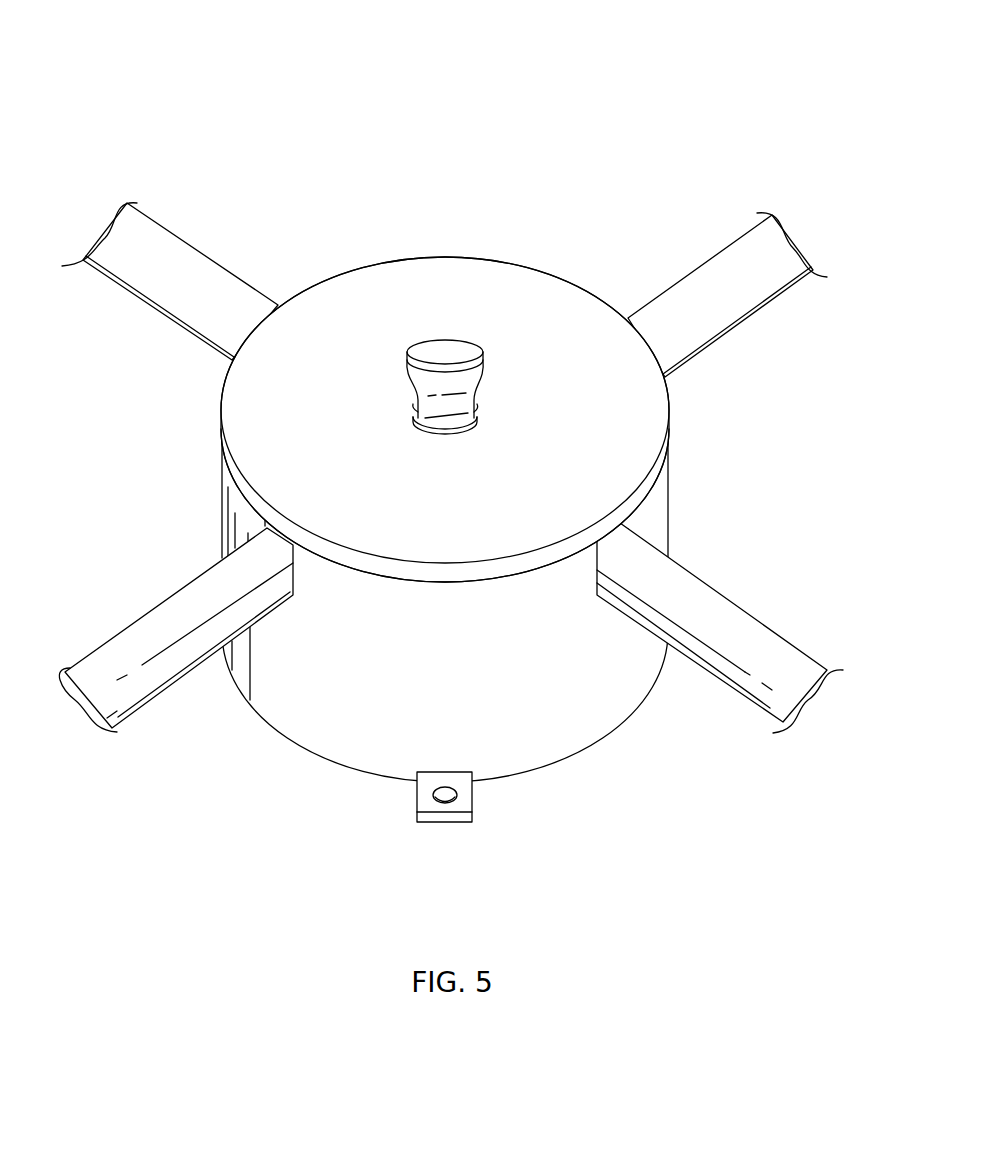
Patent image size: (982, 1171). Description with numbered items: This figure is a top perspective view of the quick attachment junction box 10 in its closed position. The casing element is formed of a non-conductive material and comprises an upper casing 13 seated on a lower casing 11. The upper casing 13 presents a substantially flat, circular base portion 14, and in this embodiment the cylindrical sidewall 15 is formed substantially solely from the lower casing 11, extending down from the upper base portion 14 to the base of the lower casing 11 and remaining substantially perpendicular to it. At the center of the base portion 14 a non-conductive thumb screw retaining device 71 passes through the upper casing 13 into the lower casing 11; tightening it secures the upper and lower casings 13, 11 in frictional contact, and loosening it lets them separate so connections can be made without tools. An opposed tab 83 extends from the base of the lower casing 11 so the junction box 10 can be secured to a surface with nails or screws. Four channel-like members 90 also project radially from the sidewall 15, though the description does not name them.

The quick attachment junction box 10 is at (330, 117).
The lower casing 11 is at (688, 518).
The upper casing 13 is at (679, 400).
The base portion 14 is at (352, 298).
The sidewall 15 is at (249, 733).
The thumb screw retaining device 71 is at (455, 357).
The opposed tabs 83 is at (467, 800).
The support arm 90 is at (200, 233).